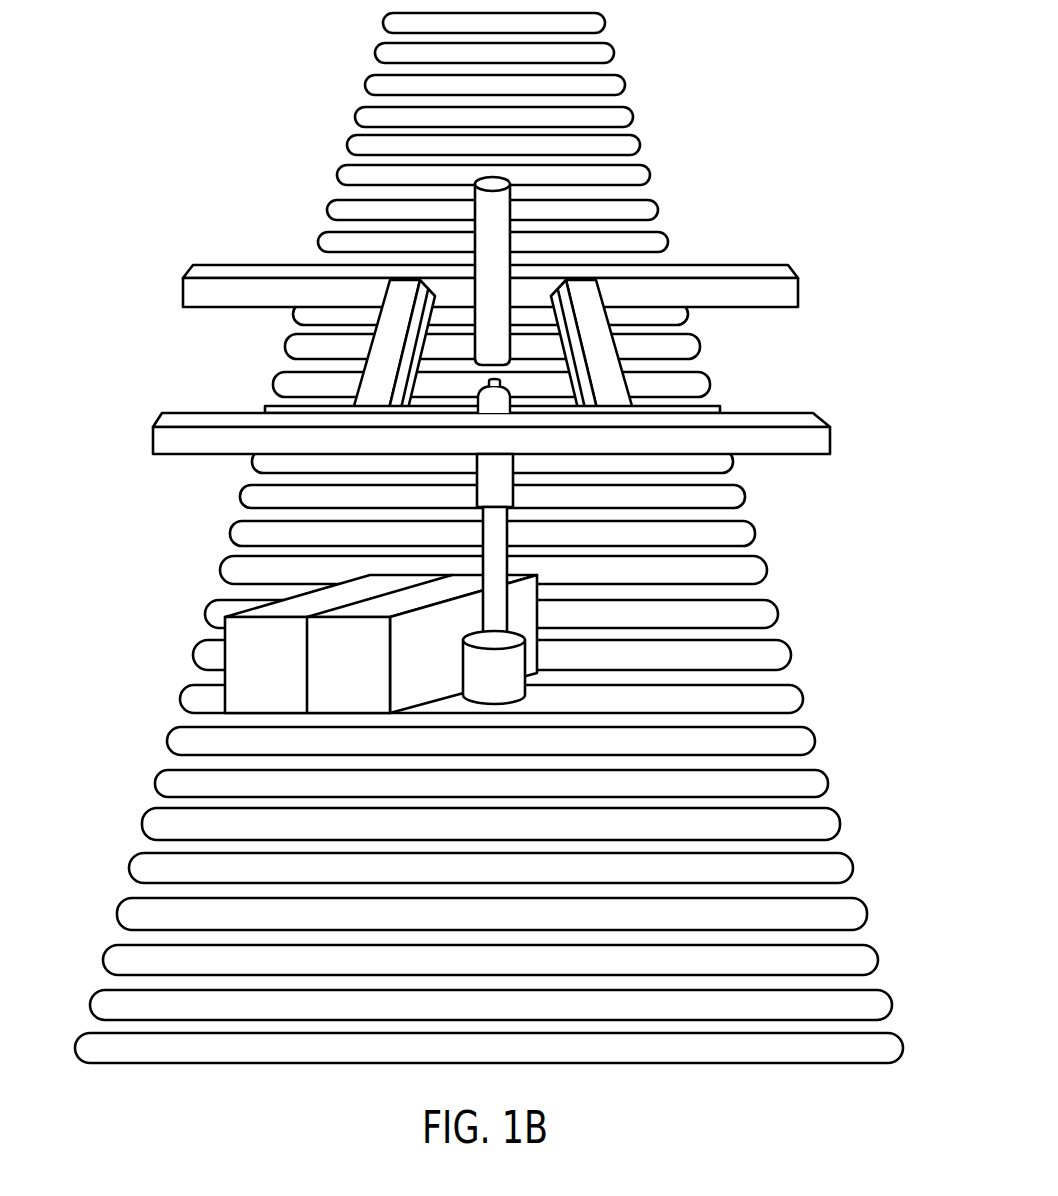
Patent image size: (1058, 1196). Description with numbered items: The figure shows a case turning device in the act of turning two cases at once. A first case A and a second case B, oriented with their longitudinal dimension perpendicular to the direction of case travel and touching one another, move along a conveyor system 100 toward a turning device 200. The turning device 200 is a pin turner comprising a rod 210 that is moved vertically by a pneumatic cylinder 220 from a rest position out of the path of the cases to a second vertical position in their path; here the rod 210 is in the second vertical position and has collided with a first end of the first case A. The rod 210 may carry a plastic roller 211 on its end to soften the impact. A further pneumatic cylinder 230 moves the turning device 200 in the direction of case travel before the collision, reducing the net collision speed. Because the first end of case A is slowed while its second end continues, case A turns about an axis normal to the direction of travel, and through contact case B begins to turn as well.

The conveyor system 100 is at (853, 607).
The turning device 200 is at (643, 349).
The rod 210 is at (497, 533).
The plastic roller 211 is at (513, 687).
The pneumatic cylinder 220 is at (504, 209).
The pneumatic cylinder 230 is at (493, 399).
The first case A is at (327, 685).
The second case B is at (370, 470).